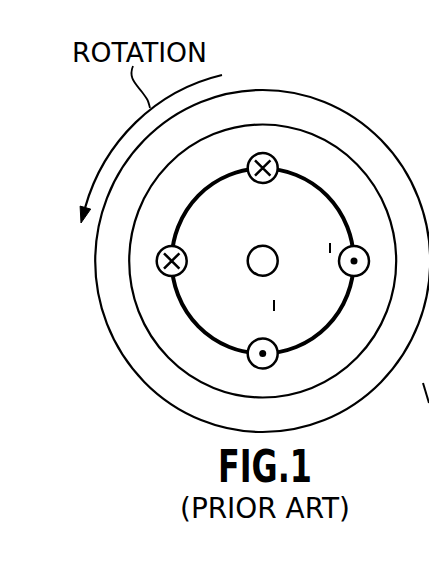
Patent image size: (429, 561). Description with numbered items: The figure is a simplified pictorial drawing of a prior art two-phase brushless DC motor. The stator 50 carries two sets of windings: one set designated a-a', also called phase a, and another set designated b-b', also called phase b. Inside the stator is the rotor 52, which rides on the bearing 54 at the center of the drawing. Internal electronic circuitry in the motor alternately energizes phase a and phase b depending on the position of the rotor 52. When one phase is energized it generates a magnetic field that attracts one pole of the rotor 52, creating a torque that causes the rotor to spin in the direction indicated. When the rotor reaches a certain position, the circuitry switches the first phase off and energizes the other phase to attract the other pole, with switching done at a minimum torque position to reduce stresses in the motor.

The stator 50 is at (187, 318).
The rotor 52 is at (268, 90).
The bearing 54 is at (252, 250).